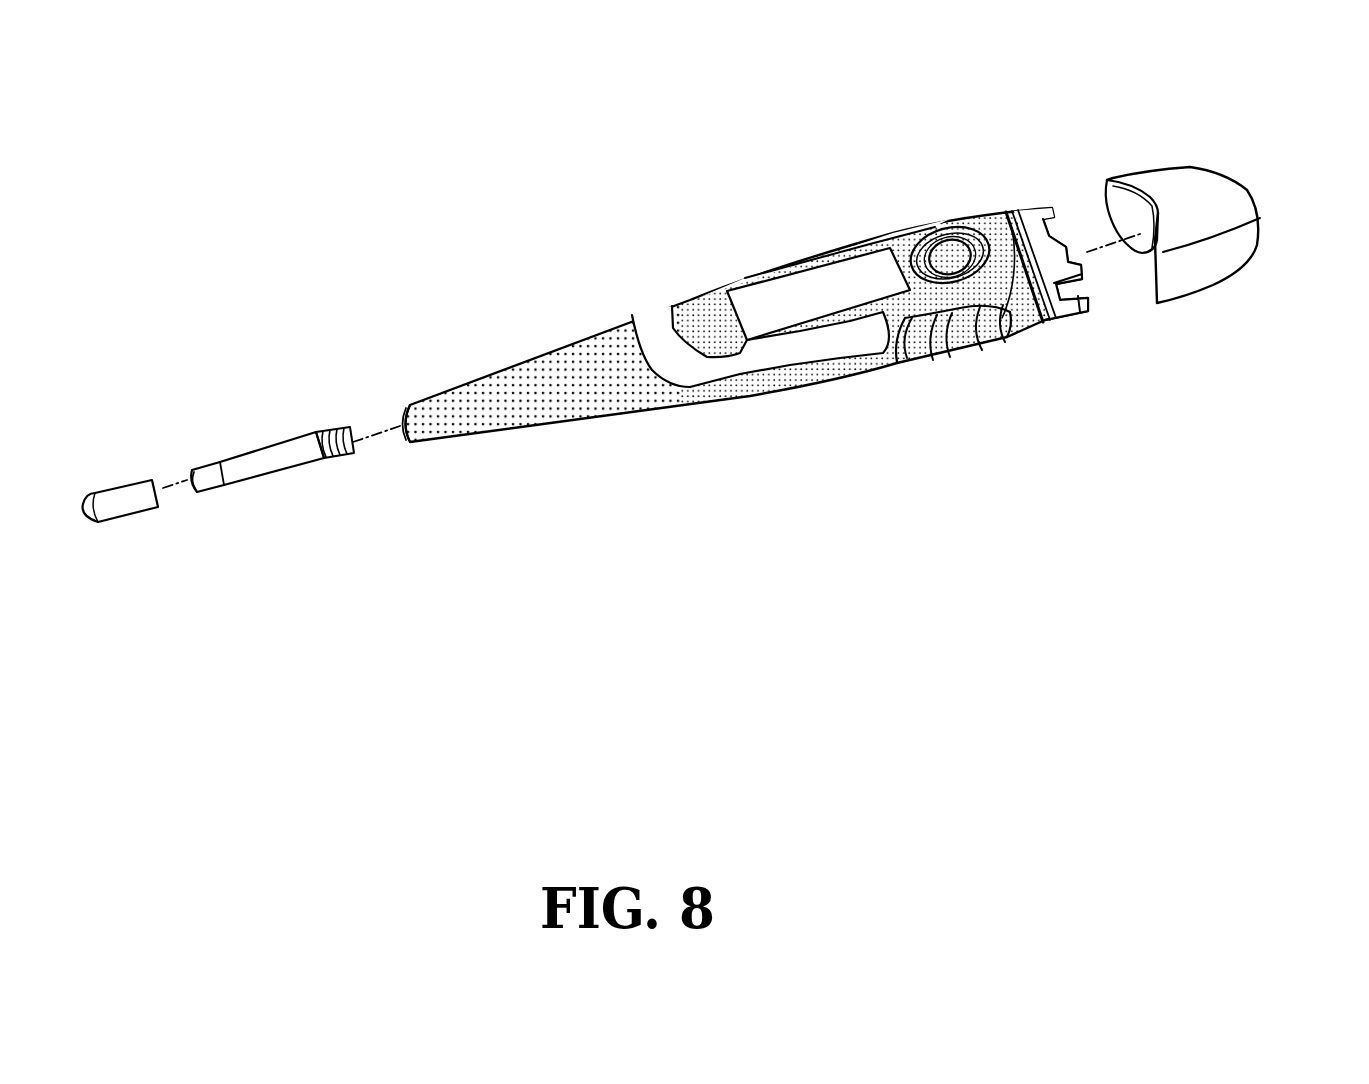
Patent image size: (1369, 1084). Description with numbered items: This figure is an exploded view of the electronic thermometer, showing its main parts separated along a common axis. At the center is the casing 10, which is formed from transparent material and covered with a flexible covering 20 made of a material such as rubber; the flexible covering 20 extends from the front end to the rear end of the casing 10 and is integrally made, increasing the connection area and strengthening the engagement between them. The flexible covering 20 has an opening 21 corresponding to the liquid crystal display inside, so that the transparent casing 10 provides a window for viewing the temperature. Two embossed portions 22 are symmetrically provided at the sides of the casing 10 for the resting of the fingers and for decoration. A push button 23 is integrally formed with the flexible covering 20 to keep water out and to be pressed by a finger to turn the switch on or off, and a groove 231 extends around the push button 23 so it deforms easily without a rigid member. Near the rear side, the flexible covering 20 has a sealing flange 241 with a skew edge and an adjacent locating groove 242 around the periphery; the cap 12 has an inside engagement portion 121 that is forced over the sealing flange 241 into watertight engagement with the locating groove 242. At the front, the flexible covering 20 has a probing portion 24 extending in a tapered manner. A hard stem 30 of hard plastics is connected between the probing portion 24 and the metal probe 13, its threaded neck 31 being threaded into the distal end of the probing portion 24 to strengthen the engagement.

The casing 10 is at (657, 313).
The cap 12 is at (1233, 193).
The engagement portion 121 is at (1142, 247).
The metal probe 13 is at (132, 500).
The flexible covering 20 is at (755, 390).
The opening 21 is at (871, 262).
The embossed portions 22 is at (932, 355).
The push button 23 is at (948, 252).
The groove 231 is at (995, 222).
The probing portion 24 is at (580, 403).
The sealing flange 241 is at (1053, 323).
The locating groove 242 is at (1047, 318).
The hard stem 30 is at (287, 460).
The threaded neck 31 is at (343, 462).